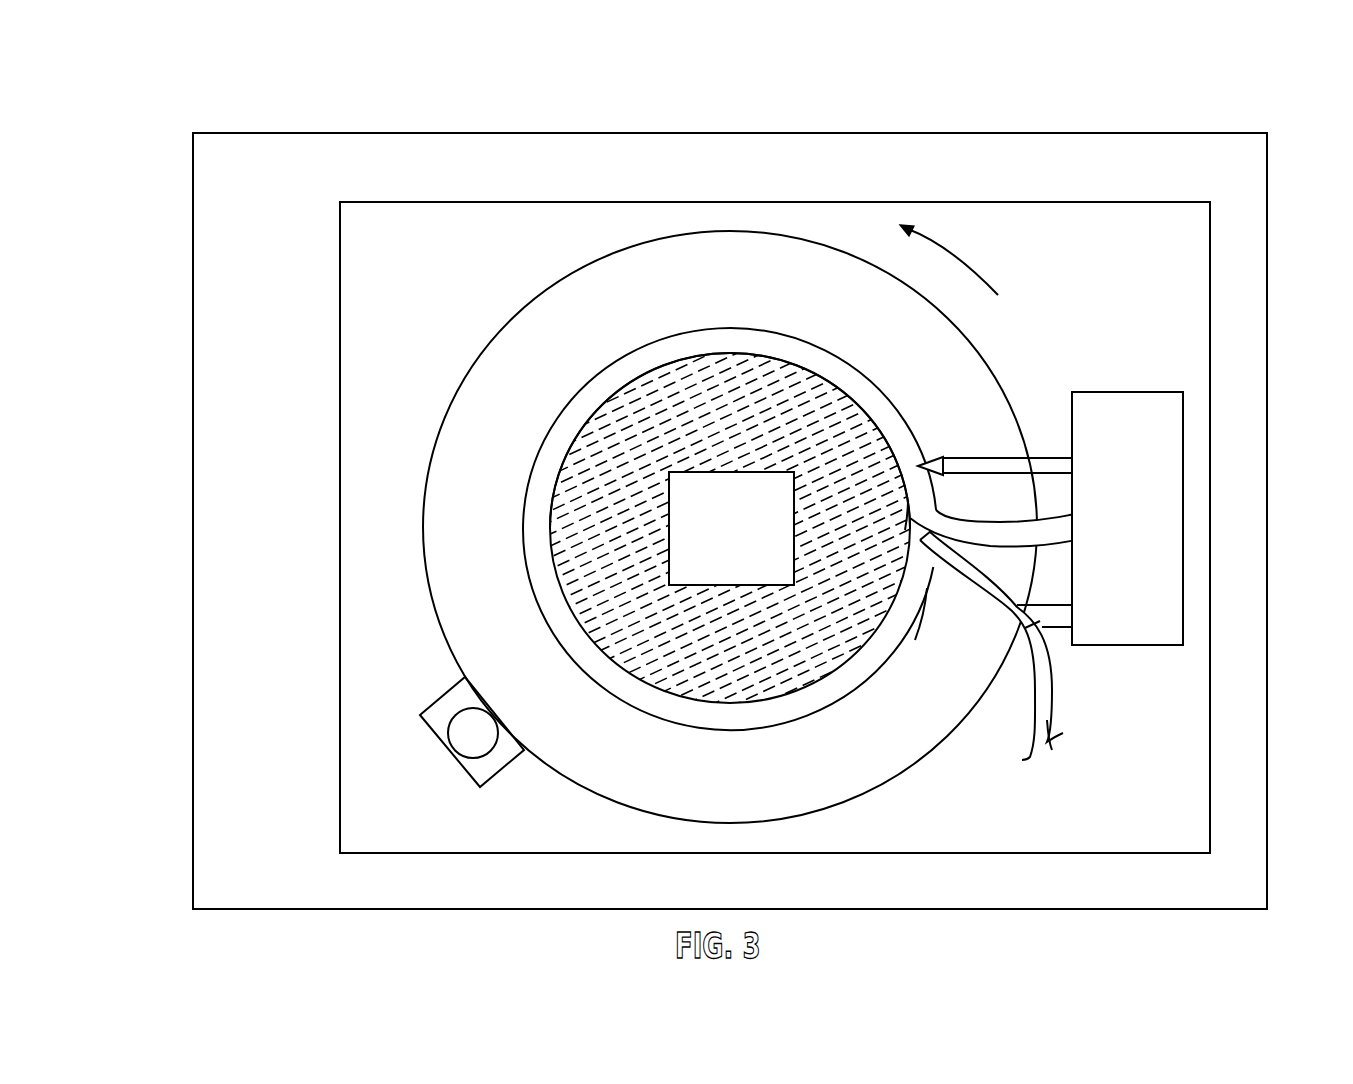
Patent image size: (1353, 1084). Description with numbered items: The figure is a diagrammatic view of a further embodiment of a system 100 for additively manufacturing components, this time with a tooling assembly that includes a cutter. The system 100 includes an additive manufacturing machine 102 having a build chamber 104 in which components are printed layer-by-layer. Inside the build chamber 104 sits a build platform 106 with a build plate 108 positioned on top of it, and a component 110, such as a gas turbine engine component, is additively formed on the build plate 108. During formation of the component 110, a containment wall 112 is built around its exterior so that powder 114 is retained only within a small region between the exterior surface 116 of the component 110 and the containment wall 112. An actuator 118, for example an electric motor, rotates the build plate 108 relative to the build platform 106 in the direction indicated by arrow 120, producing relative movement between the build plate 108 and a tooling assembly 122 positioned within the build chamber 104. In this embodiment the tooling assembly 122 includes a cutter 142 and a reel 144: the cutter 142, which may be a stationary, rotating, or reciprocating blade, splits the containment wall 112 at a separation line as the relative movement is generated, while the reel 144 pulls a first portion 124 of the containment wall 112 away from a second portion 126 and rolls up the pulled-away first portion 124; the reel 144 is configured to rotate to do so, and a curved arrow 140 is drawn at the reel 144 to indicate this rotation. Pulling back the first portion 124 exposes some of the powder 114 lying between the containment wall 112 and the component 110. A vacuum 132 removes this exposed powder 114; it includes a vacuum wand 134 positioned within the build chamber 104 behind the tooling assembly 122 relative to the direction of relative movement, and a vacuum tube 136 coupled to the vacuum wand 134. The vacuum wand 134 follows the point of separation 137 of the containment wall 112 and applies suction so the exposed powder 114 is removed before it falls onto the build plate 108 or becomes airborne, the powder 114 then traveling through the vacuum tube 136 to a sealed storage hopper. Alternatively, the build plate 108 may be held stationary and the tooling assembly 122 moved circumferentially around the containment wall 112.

The system 100 is at (170, 118).
The additive manufacturing machine 102 is at (289, 126).
The build chamber 104 is at (468, 133).
The build platform 106 is at (340, 372).
The build plate 108 is at (545, 293).
The component 110 is at (746, 542).
The containment wall 112 is at (636, 340).
The powder 114 is at (852, 524).
The exterior surface 116 is at (668, 525).
The actuator 118 is at (440, 745).
The arrow 120 is at (973, 265).
The tooling assembly 122 is at (1160, 392).
The first portion 124 is at (1140, 513).
The second portion 126 is at (918, 588).
The vacuum 132 is at (1023, 645).
The vacuum wand 134 is at (1025, 627).
The vacuum tube 136 is at (1047, 720).
The point of separation 137 is at (905, 515).
The arm rotation 140 is at (1105, 437).
The cutter 142 is at (978, 455).
The reel 144 is at (1131, 480).